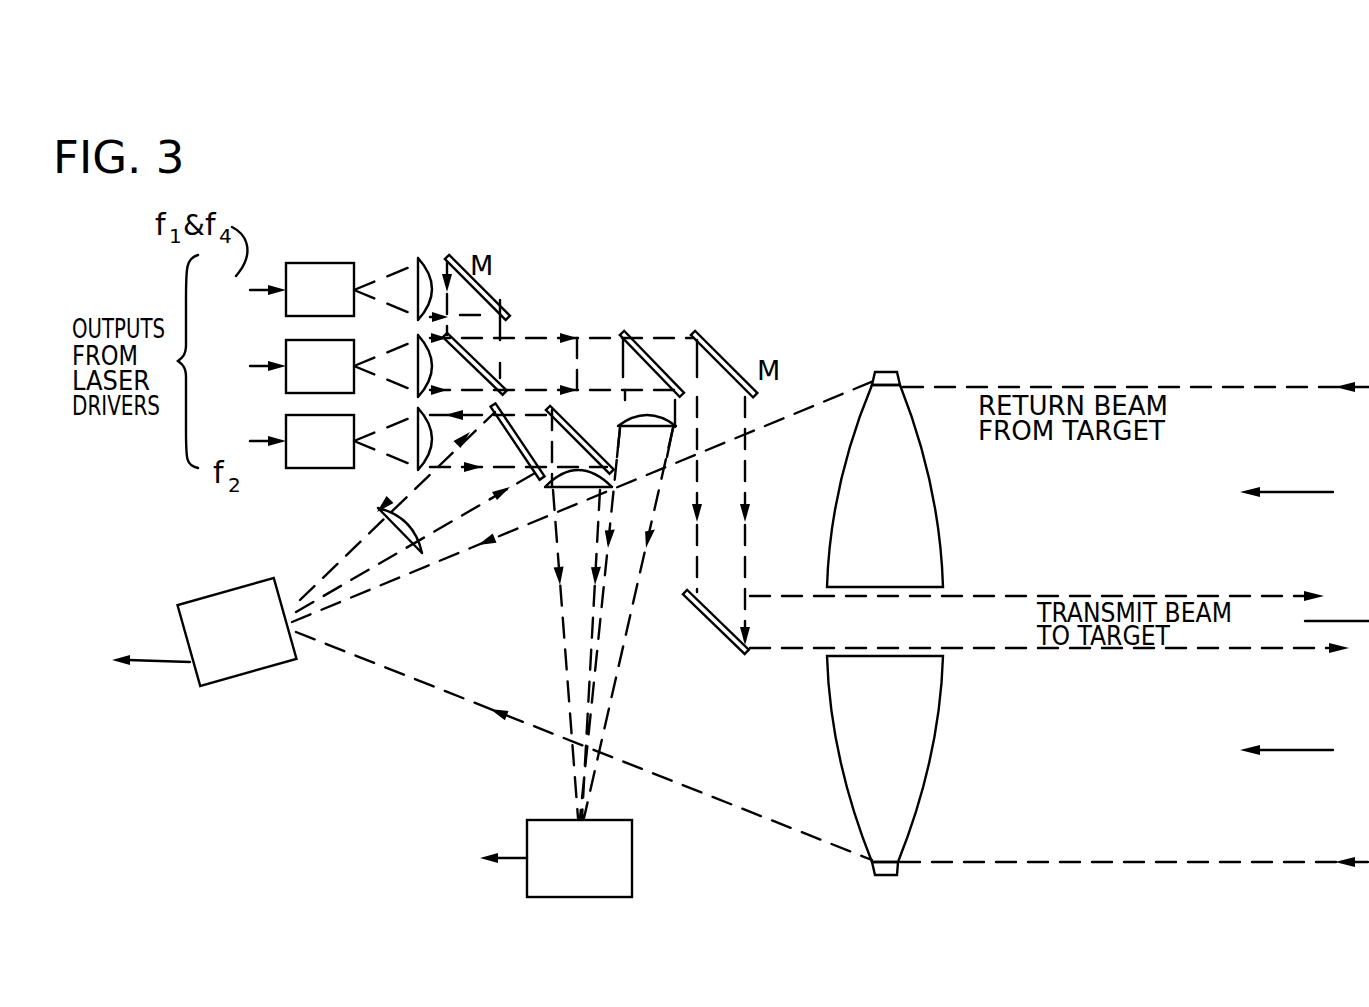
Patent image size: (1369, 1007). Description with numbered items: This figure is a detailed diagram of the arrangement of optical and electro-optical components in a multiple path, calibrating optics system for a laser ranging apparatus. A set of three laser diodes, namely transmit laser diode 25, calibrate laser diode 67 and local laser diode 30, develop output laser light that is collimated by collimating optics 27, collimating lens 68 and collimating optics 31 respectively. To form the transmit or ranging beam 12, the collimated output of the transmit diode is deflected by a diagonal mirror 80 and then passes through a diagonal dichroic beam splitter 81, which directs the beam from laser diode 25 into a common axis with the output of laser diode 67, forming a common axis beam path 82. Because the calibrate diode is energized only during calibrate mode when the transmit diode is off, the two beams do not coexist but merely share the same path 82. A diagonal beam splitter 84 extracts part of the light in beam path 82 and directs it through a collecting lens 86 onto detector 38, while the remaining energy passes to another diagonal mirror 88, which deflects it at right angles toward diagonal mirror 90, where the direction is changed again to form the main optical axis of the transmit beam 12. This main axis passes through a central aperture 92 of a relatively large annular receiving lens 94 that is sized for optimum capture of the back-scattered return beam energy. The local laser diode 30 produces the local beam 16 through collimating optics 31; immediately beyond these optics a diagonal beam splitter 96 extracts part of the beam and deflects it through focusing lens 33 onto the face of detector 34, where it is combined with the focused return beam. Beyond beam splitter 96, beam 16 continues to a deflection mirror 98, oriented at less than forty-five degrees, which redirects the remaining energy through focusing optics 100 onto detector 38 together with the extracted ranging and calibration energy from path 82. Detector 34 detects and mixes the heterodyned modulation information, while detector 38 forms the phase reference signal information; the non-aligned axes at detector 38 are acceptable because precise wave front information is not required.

The transmit or ranging beam 12 is at (1059, 624).
The local beam 16 is at (402, 460).
The transmit laser diode 25 is at (312, 262).
The collimating optics 27 is at (429, 258).
The local laser diode 30 is at (297, 414).
The collimating optics 31 is at (418, 410).
The focusing lens 33 is at (410, 557).
The detector 34 is at (178, 604).
The detector 38 is at (632, 857).
The calibrate laser diode 67 is at (297, 340).
The collimating lens 68 is at (418, 337).
The diagonal mirror 80 is at (487, 300).
The diagonal dichroic beam splitter 81 is at (480, 368).
The common axis beam path 82 is at (583, 364).
The diagonal beam splitter 84 is at (643, 338).
The collecting lens 86 is at (641, 426).
The diagonal mirror 88 is at (722, 356).
The diagonal mirror 90 is at (709, 616).
The central aperture 92 is at (827, 587).
The annular receiving lens 94 is at (879, 372).
The diagonal beam splitter 96 is at (532, 474).
The deflection mirror 98 is at (585, 407).
The focusing optics 100 is at (578, 497).